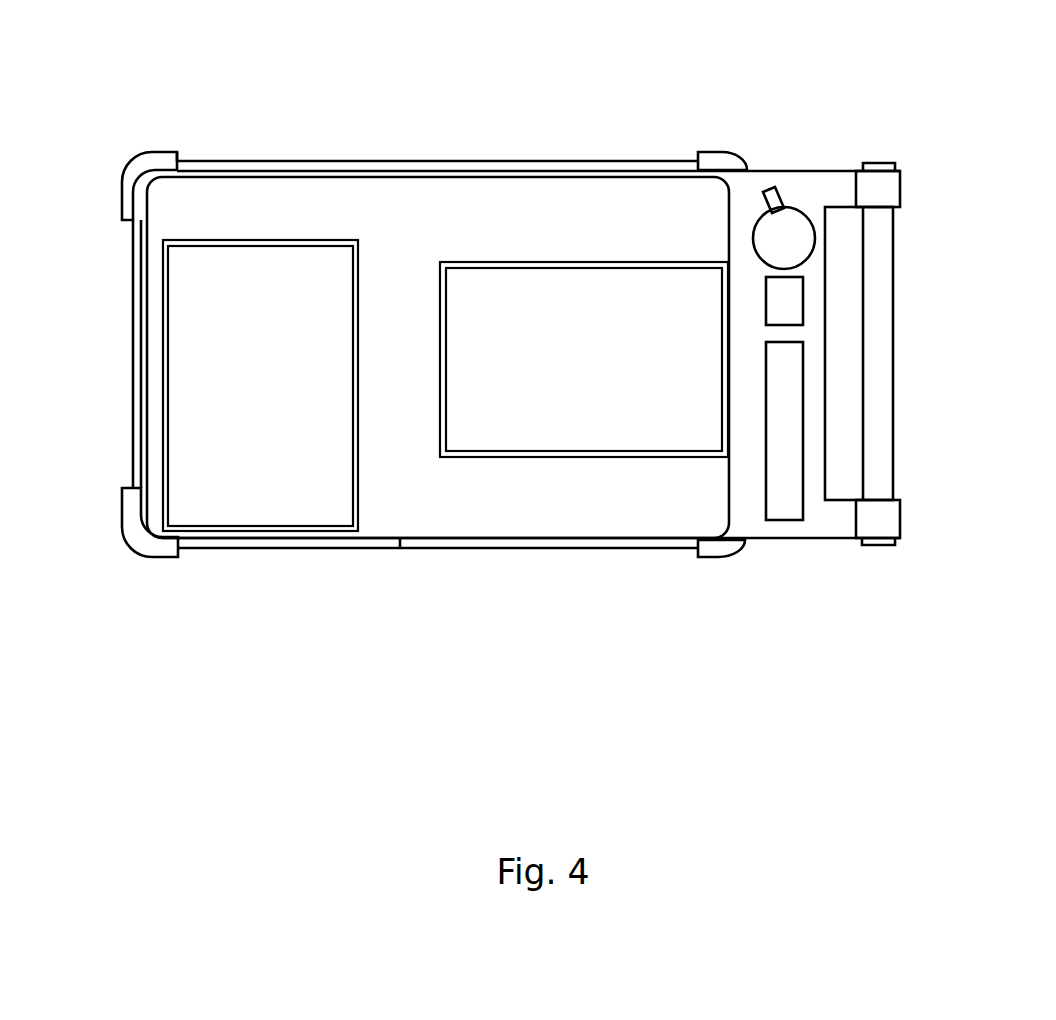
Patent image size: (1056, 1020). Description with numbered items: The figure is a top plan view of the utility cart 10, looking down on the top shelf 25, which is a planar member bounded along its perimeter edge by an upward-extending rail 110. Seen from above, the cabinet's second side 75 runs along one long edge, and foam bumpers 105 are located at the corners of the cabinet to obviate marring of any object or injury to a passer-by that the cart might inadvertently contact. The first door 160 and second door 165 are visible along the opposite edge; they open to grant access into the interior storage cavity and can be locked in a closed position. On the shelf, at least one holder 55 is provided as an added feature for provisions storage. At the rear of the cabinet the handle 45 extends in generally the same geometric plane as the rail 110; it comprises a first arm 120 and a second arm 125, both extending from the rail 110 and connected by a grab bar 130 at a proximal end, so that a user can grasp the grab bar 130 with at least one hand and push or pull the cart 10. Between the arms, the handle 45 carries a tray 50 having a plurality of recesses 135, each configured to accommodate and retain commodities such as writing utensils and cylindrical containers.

The utility cart 10 is at (943, 97).
The top shelf 25 is at (404, 215).
The handle 45 is at (917, 444).
The tray 50 is at (802, 190).
The holder 55 is at (213, 265).
The second side 75 is at (563, 160).
The foam bumper 105 is at (139, 155).
The rail 110 is at (478, 172).
The first arm 120 is at (878, 195).
The second arm 125 is at (856, 521).
The grab bar 130 is at (900, 390).
The recess 135 is at (785, 372).
The first door 160 is at (528, 549).
The second door 165 is at (358, 549).